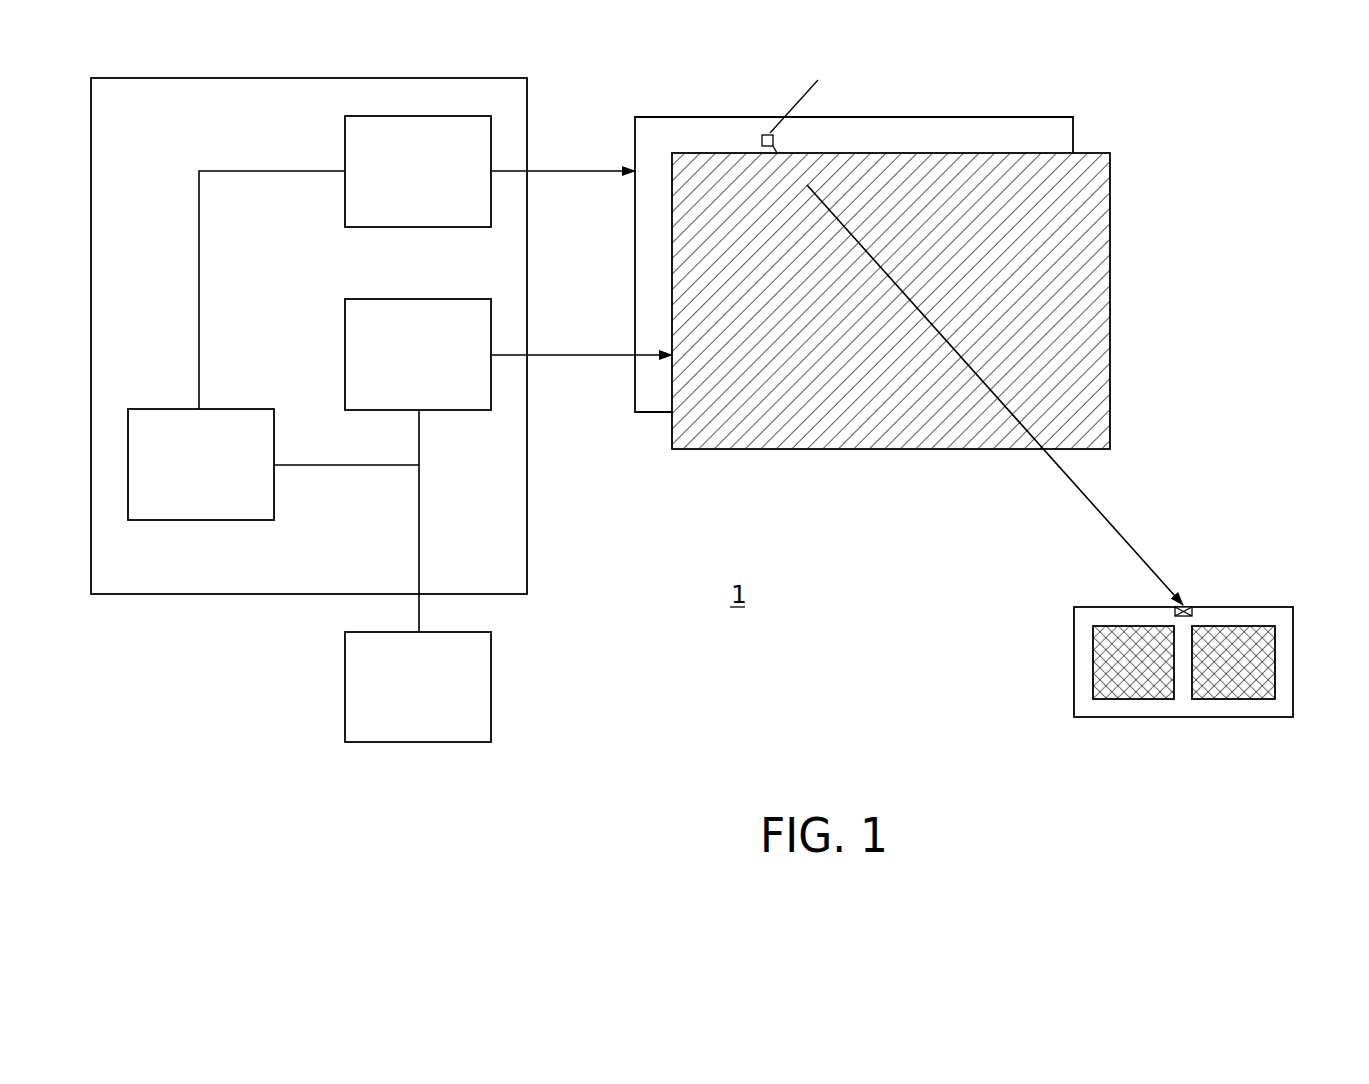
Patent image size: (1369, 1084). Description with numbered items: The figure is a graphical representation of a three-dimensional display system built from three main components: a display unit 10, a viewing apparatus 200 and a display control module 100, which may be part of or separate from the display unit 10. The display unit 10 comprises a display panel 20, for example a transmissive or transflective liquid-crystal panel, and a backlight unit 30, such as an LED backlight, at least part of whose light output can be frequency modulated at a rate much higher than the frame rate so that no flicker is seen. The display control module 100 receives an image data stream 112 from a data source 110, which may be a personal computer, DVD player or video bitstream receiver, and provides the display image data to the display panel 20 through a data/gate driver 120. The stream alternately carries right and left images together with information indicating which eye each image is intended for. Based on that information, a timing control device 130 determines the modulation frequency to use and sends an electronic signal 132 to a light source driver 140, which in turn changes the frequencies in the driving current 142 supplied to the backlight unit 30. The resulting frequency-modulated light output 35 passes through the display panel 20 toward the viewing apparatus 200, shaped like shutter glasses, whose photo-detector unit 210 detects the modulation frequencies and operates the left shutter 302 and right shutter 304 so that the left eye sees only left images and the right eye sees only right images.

The display unit 10 is at (902, 247).
The display panel 20 is at (1110, 237).
The backlight unit 30 is at (940, 118).
The light output 35 is at (1127, 542).
The display control module 100 is at (527, 552).
The data source 110 is at (345, 668).
The image data stream 112 is at (420, 498).
The data/gate driver 120 is at (343, 351).
The timing control device 130 is at (223, 520).
The electronic signal 132 is at (198, 308).
The light source driver 140 is at (343, 193).
The driving current 142 is at (548, 172).
The viewing apparatus 200 is at (1176, 632).
The photo-detector unit 210 is at (1192, 605).
The left shutter 302 is at (1095, 676).
The right shutter 304 is at (1272, 663).